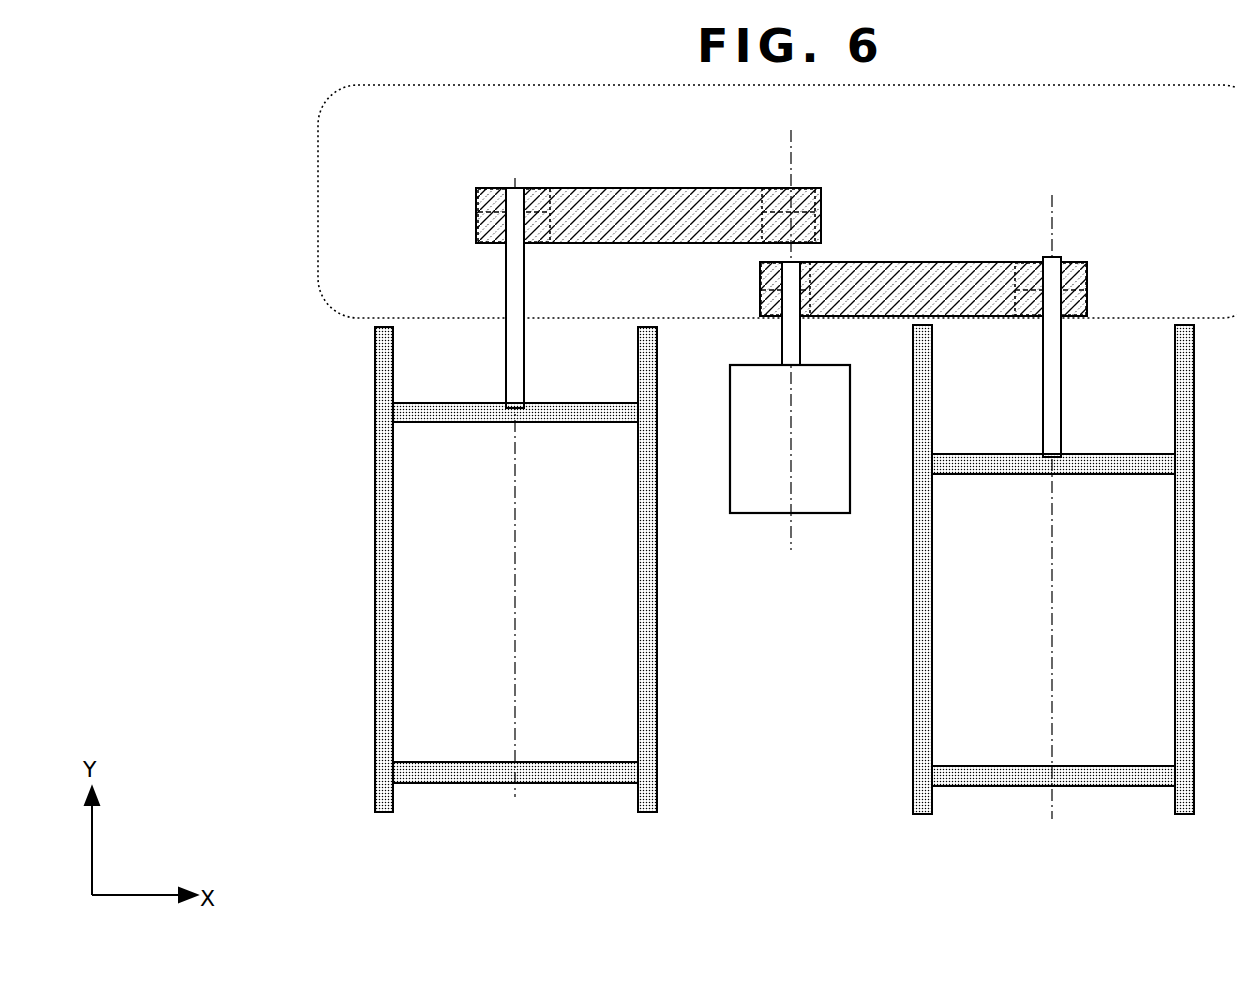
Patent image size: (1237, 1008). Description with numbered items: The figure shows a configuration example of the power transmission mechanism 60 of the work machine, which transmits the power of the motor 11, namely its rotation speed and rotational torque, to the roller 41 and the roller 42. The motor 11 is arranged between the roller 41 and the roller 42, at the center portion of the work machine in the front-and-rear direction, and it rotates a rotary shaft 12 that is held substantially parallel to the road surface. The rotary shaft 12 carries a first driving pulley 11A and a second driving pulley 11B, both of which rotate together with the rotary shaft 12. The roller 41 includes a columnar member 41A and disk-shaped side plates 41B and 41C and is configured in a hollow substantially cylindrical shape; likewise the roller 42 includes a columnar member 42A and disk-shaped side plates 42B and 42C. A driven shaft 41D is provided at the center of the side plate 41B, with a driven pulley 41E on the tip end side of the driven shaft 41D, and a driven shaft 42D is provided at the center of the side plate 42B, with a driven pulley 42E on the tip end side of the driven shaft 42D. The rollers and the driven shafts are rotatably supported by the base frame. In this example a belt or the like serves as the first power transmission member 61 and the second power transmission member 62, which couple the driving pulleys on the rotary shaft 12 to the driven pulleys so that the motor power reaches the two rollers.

The power transmission mechanism 60 is at (578, 85).
The first power transmission member 61 is at (905, 262).
The second power transmission member 62 is at (645, 188).
The motor 11 is at (765, 513).
The first driving pulley 11A is at (758, 298).
The second driving pulley 11B is at (752, 190).
The rotary shaft 12 is at (782, 330).
The roller 41 is at (999, 608).
The columnar member 41A is at (913, 728).
The side plate 41B is at (1003, 474).
The side plate 41C is at (1014, 786).
The driven shaft 41D is at (1062, 395).
The driven pulley 41E is at (1003, 262).
The roller 42 is at (436, 606).
The columnar member 42A is at (375, 700).
The side plate 42B is at (478, 422).
The side plate 42C is at (445, 783).
The driven shaft 42D is at (525, 308).
The driven pulley 42E is at (492, 190).